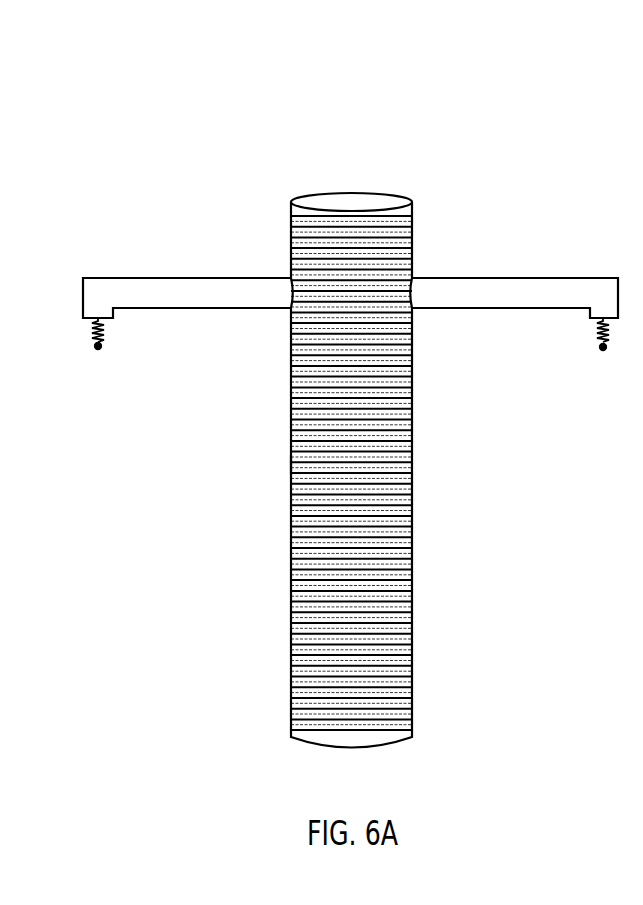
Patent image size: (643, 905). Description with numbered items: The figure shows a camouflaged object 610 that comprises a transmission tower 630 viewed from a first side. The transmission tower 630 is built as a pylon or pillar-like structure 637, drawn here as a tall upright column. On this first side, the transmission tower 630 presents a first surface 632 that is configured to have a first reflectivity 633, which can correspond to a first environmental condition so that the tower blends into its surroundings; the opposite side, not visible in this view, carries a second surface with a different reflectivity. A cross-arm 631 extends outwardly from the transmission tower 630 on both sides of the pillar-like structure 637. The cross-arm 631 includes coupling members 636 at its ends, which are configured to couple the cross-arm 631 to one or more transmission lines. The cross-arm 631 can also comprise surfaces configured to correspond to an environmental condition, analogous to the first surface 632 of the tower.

The camouflaged object 610 is at (362, 120).
The transmission tower 630 is at (376, 492).
The cross-arm 631 is at (502, 291).
The first surface 632 is at (376, 366).
The first reflectivity 633 is at (306, 466).
The coupling member 636 is at (97, 351).
The pylon or pillar-like structure 637 is at (326, 596).